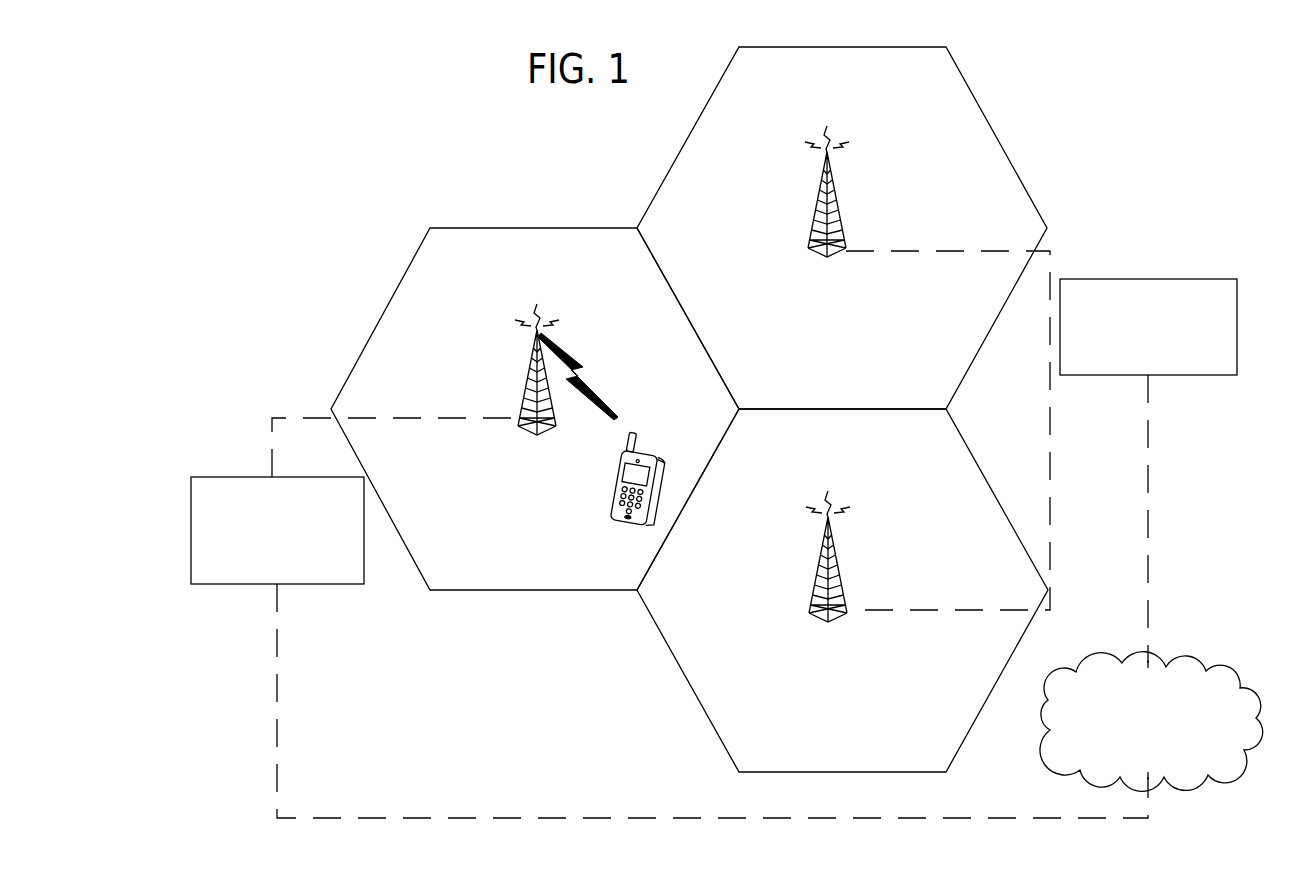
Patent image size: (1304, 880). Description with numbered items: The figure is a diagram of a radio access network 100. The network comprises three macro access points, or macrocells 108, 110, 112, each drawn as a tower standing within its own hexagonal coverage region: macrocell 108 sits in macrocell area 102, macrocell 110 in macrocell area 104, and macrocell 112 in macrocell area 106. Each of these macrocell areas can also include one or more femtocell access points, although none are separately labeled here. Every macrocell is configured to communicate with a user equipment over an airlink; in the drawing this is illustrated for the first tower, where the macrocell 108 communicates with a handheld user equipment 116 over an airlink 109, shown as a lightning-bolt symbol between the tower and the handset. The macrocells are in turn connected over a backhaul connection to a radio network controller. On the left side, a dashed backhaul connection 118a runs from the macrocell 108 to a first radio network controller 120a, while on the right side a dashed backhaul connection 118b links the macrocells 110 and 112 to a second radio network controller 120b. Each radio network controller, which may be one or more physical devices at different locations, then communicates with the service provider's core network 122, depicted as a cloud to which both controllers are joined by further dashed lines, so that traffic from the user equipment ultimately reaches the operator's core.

The radio access network 100 is at (470, 121).
The macrocell area 102 is at (379, 298).
The macrocell area 104 is at (984, 103).
The macrocell area 106 is at (665, 683).
The macrocell 108 is at (535, 437).
The airlink 109 is at (590, 371).
The macrocell 110 is at (826, 258).
The macrocell 112 is at (827, 623).
The user equipment 116 is at (621, 517).
The backhaul connection 118a is at (270, 440).
The backhaul connection 118b is at (1050, 522).
The radio network controller 120a is at (277, 530).
The radio network controller 120b is at (1148, 327).
The service provider's core network 122 is at (1142, 660).